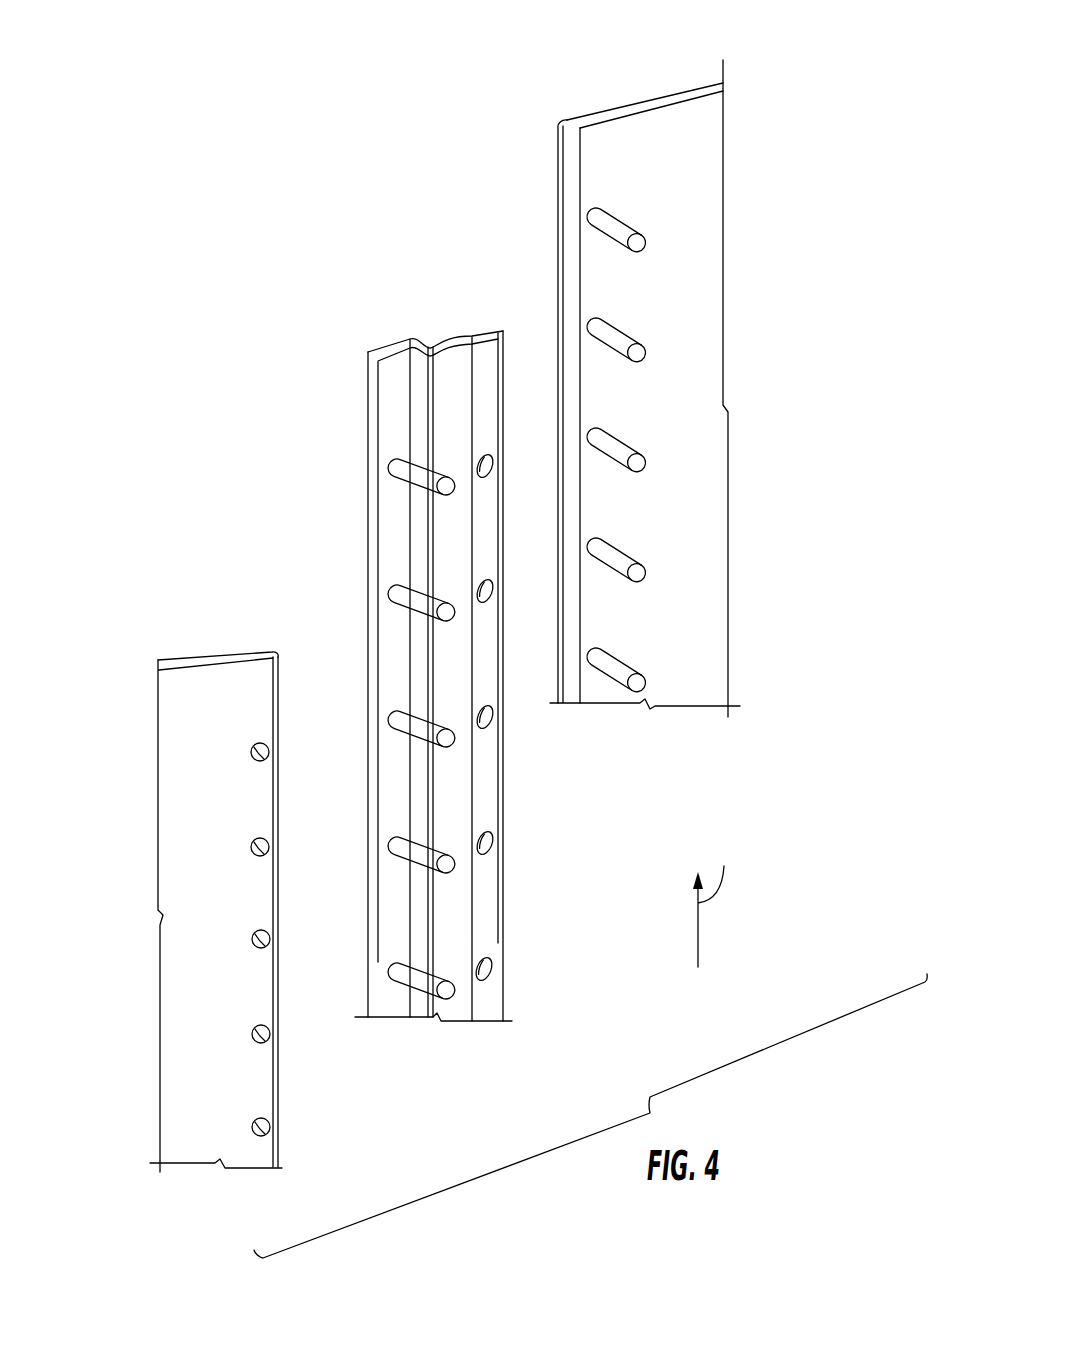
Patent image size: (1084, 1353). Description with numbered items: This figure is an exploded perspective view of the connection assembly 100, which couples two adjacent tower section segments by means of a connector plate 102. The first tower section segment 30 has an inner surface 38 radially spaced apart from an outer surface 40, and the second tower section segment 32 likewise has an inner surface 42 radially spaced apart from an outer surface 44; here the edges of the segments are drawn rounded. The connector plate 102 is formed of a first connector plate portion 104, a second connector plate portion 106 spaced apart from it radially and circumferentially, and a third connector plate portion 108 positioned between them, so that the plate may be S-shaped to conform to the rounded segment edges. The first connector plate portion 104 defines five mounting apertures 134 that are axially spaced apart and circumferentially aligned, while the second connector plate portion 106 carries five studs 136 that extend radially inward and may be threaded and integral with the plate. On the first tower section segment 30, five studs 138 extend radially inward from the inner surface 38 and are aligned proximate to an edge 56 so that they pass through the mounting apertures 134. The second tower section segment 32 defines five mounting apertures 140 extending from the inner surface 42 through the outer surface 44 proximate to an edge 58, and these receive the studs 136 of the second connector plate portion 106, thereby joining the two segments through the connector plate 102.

The connection assembly 100 is at (228, 136).
The first tower section segment 30 is at (648, 66).
The second tower section segment 32 is at (168, 641).
The inner surface 38 is at (665, 523).
The outer surface 40 is at (601, 106).
The inner surface 42 is at (230, 921).
The outer surface 44 is at (251, 650).
The edge 56 is at (556, 355).
The edge 58 is at (283, 980).
The connector plate 102 is at (330, 383).
The first connector plate portion 104 is at (485, 338).
The second connector plate portion 106 is at (394, 340).
The third connector plate portion 108 is at (427, 340).
The mounting apertures 134 is at (520, 728).
The studs 136 is at (410, 482).
The studs 138 is at (612, 232).
The mounting apertures 140 is at (277, 873).